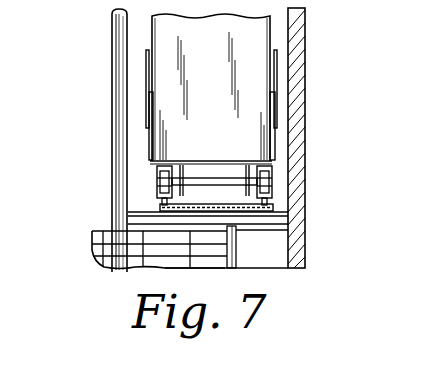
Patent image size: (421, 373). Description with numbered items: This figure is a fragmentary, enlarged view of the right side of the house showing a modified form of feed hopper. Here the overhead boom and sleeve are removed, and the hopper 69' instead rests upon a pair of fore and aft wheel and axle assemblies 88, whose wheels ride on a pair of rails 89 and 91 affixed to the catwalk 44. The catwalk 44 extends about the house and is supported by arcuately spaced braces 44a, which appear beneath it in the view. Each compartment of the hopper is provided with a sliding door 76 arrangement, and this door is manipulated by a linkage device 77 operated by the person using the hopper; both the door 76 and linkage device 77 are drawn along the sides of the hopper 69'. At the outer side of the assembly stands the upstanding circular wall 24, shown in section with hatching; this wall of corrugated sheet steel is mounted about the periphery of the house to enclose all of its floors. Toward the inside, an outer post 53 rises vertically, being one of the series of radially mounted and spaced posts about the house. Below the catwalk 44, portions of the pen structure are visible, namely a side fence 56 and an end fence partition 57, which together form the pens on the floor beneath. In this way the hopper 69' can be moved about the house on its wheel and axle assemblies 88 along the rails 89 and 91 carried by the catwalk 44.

The feed hopper 69' is at (264, 83).
The linkage device 77 is at (146, 63).
The sliding door 76 is at (149, 141).
The outer post 53 is at (112, 115).
The circular wall 24 is at (298, 143).
The wheel and axle assembly 88 is at (274, 175).
The rail 91 is at (270, 204).
The brace 44a is at (280, 210).
The catwalk 44 is at (243, 209).
The rail 89 is at (161, 206).
The side fence 56 is at (91, 224).
The end fence partition 57 is at (222, 269).